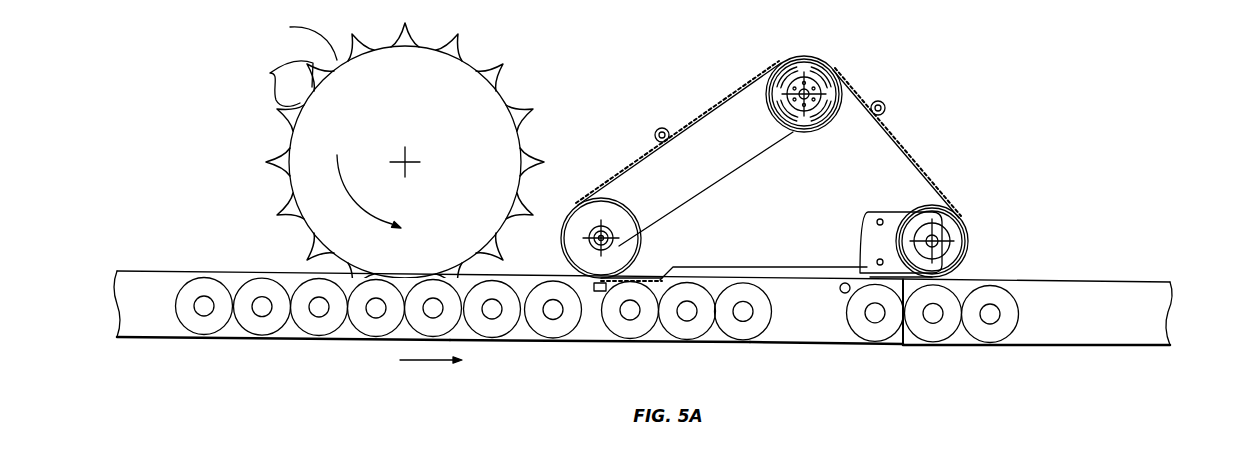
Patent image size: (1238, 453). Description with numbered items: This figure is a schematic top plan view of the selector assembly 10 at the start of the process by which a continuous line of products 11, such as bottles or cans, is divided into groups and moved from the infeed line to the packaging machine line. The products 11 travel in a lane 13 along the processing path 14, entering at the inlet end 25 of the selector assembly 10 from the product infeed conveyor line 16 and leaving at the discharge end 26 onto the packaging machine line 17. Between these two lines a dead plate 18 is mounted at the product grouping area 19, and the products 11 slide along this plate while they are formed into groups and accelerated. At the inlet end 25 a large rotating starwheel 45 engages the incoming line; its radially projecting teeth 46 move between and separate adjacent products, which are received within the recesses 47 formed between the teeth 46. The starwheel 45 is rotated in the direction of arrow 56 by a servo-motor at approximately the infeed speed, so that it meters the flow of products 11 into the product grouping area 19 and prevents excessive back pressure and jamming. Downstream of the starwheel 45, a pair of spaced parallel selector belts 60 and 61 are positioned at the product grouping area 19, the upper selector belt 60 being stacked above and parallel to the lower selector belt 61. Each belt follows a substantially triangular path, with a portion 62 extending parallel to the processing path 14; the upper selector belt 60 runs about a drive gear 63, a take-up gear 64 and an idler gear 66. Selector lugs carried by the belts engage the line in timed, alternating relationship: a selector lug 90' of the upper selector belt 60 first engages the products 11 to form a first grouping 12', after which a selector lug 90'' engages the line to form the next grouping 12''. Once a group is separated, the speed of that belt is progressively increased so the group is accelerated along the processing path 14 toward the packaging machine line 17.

The selector assembly 10 is at (182, 134).
The products 11 is at (247, 290).
The first grouping of products 12' is at (1037, 338).
The next grouping of products 12'' is at (508, 327).
The lanes 13 is at (283, 338).
The processing path 14 is at (423, 363).
The product infeed conveyor line 16 is at (295, 330).
The packaging machine line 17 is at (1133, 287).
The dead plate 18 is at (603, 344).
The product grouping area 19 is at (818, 354).
The inlet end 25 is at (134, 319).
The discharge end 26 is at (1155, 318).
The starwheel 45 is at (420, 101).
The teeth 46 is at (270, 73).
The bottle receiving recesses 47 is at (385, 45).
The direction of rotation arrow 56 is at (349, 204).
The upper selector belt 60 is at (681, 113).
The lower selector belt 61 is at (944, 177).
The portion of selector belt 62 is at (790, 277).
The drive gear 63 is at (950, 230).
The take-up gear 64 is at (780, 63).
The idler gear 66 is at (603, 212).
The selector lug of upper selector belt 90' is at (834, 258).
The selector lug 90'' is at (548, 250).